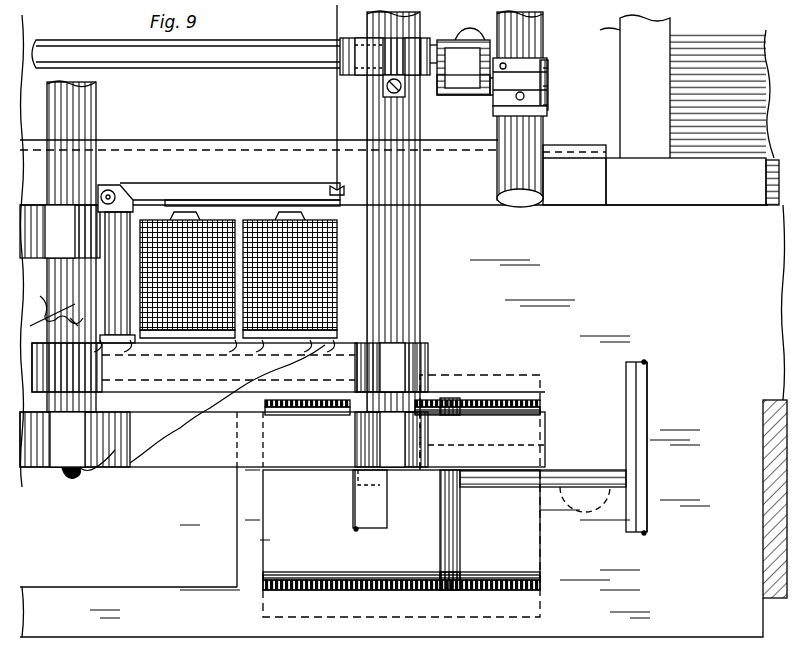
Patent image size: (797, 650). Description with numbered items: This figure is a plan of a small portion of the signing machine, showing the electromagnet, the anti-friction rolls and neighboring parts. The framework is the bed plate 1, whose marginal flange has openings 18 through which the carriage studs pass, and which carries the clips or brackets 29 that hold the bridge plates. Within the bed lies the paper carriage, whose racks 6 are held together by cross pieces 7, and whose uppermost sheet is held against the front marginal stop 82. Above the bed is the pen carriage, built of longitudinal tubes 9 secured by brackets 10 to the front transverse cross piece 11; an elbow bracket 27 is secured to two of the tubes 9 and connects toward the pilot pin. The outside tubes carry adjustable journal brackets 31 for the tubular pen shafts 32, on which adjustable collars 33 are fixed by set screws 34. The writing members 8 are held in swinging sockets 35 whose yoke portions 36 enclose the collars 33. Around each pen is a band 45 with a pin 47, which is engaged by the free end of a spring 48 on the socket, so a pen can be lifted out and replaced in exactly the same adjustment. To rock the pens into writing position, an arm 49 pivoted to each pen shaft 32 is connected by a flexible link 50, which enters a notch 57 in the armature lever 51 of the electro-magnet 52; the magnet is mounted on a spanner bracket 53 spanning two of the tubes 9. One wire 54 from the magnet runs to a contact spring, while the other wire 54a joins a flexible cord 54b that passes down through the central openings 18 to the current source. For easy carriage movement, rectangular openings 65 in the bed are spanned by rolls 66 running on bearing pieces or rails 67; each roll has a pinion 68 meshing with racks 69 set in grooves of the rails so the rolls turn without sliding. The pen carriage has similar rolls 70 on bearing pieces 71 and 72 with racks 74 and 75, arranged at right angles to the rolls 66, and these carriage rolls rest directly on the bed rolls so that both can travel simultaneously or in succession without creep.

The bed plate 1 is at (712, 55).
The racks 6 is at (661, 181).
The cross pieces 7 is at (635, 86).
The writing members 8 is at (545, 172).
The longitudinal tubes 9 is at (96, 118).
The brackets 10 is at (224, 439).
The front transverse cross piece 11 is at (282, 439).
The openings 18 is at (151, 557).
The elbow bracket 27 is at (60, 231).
The clips or brackets 29 is at (762, 493).
The adjustable journal brackets 31 is at (367, 80).
The tubular pen shafts 32 is at (172, 62).
The adjustable collars 33 is at (463, 67).
The set screws 34 is at (470, 32).
The swinging sockets 35 is at (493, 95).
The yoke portions 36 is at (460, 80).
The band 45 is at (548, 106).
The pin 47 is at (548, 88).
The spring 48 is at (548, 68).
The arm 49 is at (350, 58).
The link 50 is at (337, 78).
The armature lever 51 is at (208, 194).
The electro-magnet 52 is at (306, 290).
The spanner bracket 53 is at (194, 367).
The wire 54 is at (52, 315).
The other wire 54a is at (160, 442).
The flexible cord 54b is at (76, 473).
The notch 57 is at (345, 190).
The rectangular openings 65 is at (401, 530).
The rolls 66 is at (460, 515).
The bearing pieces or rails 67 is at (542, 412).
The pinion 68 is at (460, 402).
The racks 69 is at (505, 405).
The rolls 70 is at (522, 480).
The bearing piece 71 is at (371, 500).
The bearing piece 72 is at (626, 386).
The rack 74 is at (355, 500).
The rack 75 is at (647, 385).
The front marginal stop 82 is at (459, 172).